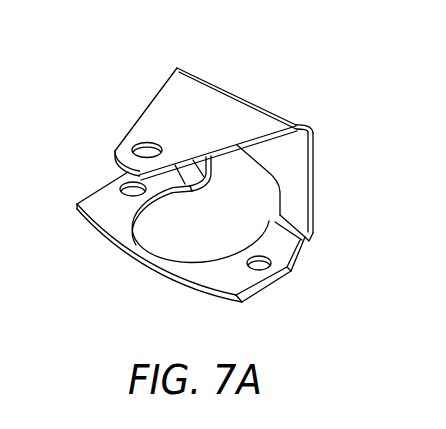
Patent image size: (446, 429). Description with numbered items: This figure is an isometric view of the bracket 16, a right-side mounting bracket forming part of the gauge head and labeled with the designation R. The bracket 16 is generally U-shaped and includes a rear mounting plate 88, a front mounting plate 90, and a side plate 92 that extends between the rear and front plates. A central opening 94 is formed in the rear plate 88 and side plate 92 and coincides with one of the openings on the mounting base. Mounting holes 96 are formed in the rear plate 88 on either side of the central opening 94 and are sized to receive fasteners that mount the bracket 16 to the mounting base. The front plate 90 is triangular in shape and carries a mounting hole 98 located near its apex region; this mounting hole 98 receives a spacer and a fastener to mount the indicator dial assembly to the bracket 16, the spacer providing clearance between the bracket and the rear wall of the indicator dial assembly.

The bracket 16 is at (257, 106).
The rear mounting plate 88 is at (280, 248).
The front mounting plate 90 is at (172, 90).
The side plate 92 is at (301, 186).
The central opening 94 is at (155, 248).
The mounting holes 96 is at (122, 186).
The mounting hole 98 is at (144, 143).